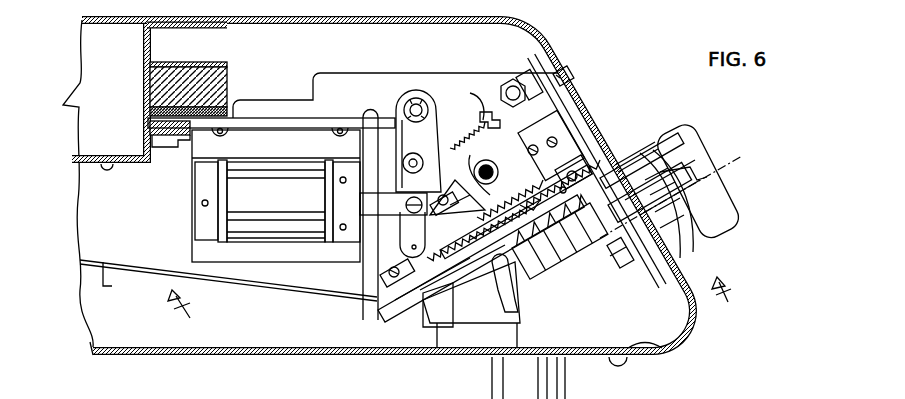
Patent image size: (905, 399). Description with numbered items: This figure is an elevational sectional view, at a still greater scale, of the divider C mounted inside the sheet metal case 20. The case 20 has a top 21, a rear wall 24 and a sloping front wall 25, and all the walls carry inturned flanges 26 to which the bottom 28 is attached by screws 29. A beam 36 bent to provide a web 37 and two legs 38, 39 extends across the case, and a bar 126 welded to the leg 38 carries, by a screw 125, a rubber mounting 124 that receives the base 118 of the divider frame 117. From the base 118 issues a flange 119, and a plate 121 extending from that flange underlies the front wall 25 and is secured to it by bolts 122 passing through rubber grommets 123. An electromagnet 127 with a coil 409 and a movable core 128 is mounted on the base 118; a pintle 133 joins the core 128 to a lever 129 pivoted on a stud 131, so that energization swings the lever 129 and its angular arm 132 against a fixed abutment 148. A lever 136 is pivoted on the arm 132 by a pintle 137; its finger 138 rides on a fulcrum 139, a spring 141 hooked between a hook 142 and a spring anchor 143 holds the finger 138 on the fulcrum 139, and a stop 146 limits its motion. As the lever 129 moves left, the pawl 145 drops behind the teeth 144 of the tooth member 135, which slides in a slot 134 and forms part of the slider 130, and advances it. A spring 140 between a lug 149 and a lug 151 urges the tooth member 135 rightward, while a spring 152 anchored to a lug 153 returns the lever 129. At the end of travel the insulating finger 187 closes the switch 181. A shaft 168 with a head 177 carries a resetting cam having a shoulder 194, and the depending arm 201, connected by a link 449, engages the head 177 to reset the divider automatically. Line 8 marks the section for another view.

The case 20 is at (86, 20).
The top 21 is at (121, 22).
The rear wall 24 is at (96, 146).
The front wall 25 is at (556, 75).
The inturned flanges 26 is at (660, 351).
The bottom 28 is at (156, 357).
The screws 29 is at (613, 365).
The beam 36 is at (146, 81).
The web 37 is at (148, 125).
The leg 38 is at (210, 62).
The leg 39 is at (122, 166).
The frame 117 is at (322, 70).
The base 118 is at (275, 119).
The flange 119 is at (377, 88).
The plate 121 is at (575, 102).
The bolts 122 is at (566, 90).
The rubber grommets 123 is at (540, 84).
The rubber mounting 124 is at (147, 110).
The screw 125 is at (170, 146).
The bar 126 is at (183, 80).
The electromagnet 127 is at (257, 247).
The movable core 128 is at (360, 200).
The lever 129 is at (380, 120).
The slider 130 is at (392, 266).
The stud 131 is at (415, 98).
The arm 132 is at (438, 185).
The pintle 133 is at (405, 215).
The slot 134 is at (605, 170).
The tooth member 135 is at (474, 176).
The lever 136 is at (507, 127).
The pintle 137 is at (520, 155).
The finger 138 is at (570, 120).
The fulcrum 139 is at (575, 142).
The spring 140 is at (638, 153).
The spring 141 is at (478, 114).
The hook 142 is at (493, 112).
The spring anchor 143 is at (413, 156).
The teeth 144 is at (442, 195).
The pawl 145 is at (474, 140).
The stop 146 is at (463, 96).
The fixed abutment 148 is at (393, 204).
The lug 149 is at (357, 322).
The lug 151 is at (648, 148).
The spring 152 is at (604, 264).
The lug 153 is at (676, 222).
The shaft 168 is at (680, 190).
The head 177 is at (530, 285).
The switch 181 is at (443, 325).
The insulating finger 187 is at (473, 285).
The shoulder 194 is at (610, 265).
The arm 201 is at (528, 378).
The coil 409 is at (230, 213).
The link 449 is at (124, 277).
The section line 8 is at (445, 289).
The divider C is at (638, 322).